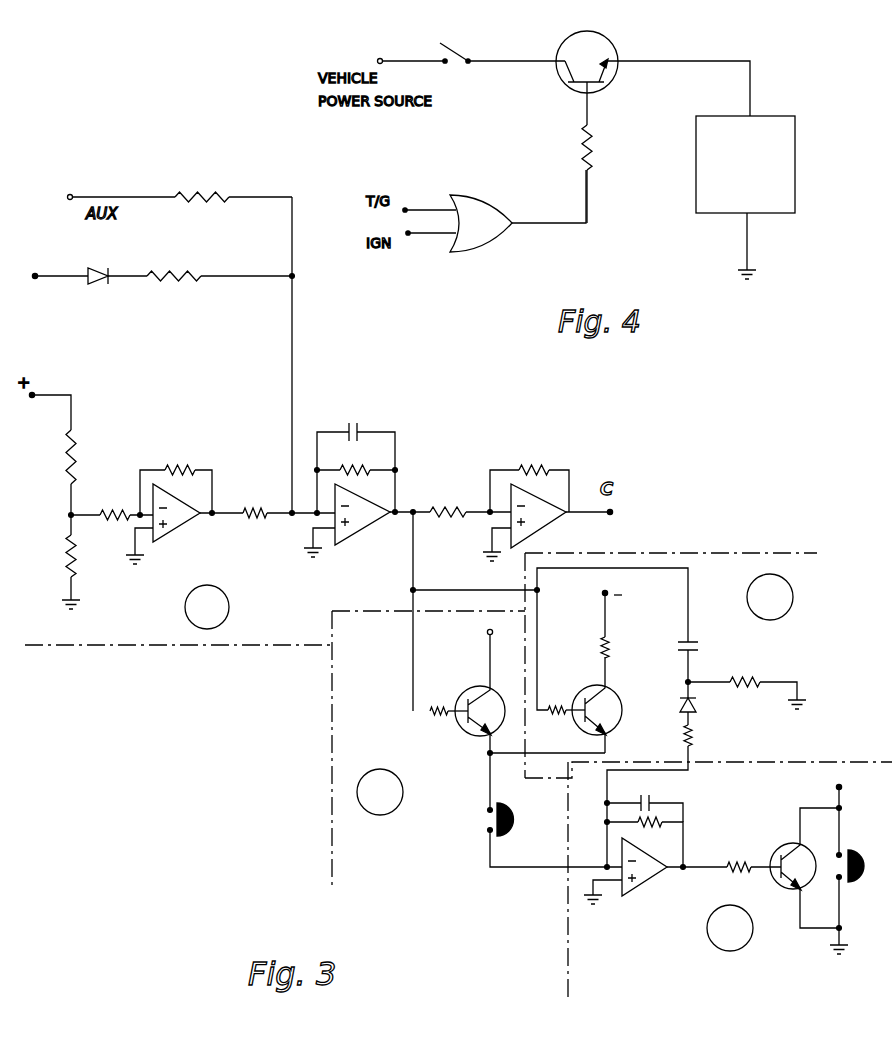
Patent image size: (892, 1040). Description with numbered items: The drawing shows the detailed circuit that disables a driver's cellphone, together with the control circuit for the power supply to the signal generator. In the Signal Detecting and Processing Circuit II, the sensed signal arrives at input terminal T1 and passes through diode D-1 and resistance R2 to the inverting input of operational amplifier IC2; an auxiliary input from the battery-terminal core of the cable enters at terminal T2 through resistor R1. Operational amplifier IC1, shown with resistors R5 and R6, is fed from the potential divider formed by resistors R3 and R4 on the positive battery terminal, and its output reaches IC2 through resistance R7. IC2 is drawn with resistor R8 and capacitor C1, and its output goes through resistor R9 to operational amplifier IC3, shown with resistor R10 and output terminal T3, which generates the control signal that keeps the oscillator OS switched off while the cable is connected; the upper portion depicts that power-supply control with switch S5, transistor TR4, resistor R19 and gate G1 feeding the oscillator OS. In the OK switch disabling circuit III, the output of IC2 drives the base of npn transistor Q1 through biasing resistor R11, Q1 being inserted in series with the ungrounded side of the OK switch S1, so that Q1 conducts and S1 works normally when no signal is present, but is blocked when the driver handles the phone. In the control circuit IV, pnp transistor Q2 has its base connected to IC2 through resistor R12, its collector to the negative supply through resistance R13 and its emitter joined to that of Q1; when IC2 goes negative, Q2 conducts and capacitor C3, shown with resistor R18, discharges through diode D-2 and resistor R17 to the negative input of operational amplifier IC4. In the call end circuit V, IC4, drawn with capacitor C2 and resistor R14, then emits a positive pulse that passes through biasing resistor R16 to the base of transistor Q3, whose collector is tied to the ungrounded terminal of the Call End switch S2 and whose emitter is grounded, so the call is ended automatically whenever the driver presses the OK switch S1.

In FIG. 4, the power switch S5 is at (457, 42).
In FIG. 4, the transistor TR4 is at (597, 53).
In FIG. 4, the resistor R19 is at (607, 158).
In FIG. 4, the oscillator OS is at (745, 197).
In FIG. 4, the OR gate G1 is at (494, 211).
In FIG. 3, the input terminal T1 is at (35, 266).
In FIG. 3, the auxiliary input terminal T2 is at (68, 187).
In FIG. 3, the output terminal T3 is at (601, 521).
In FIG. 3, the diode D-1 is at (91, 285).
In FIG. 3, the diode D-2 is at (703, 703).
In FIG. 3, the resistor R1 is at (182, 186).
In FIG. 3, the resistance R2 is at (219, 288).
In FIG. 3, the potential divider resistor R3 is at (58, 472).
In FIG. 3, the potential divider resistor R4 is at (58, 557).
In FIG. 3, the resistor R5 is at (112, 502).
In FIG. 3, the feedback resistor R6 is at (176, 481).
In FIG. 3, the resistance R7 is at (267, 501).
In FIG. 3, the feedback resistor R8 is at (356, 480).
In FIG. 3, the resistor R9 is at (470, 501).
In FIG. 3, the feedback resistor R10 is at (529, 479).
In FIG. 3, the biasing resistor R11 is at (442, 724).
In FIG. 3, the resistor R12 is at (564, 723).
In FIG. 3, the resistance R13 is at (623, 624).
In FIG. 3, the feedback resistor R14 is at (645, 842).
In FIG. 3, the biasing resistor R16 is at (724, 877).
In FIG. 3, the resistor R17 is at (668, 796).
In FIG. 3, the resistor R18 is at (747, 682).
In FIG. 3, the capacitor C1 is at (356, 436).
In FIG. 3, the capacitor C2 is at (645, 799).
In FIG. 3, the capacitor C3 is at (698, 652).
In FIG. 3, the operational amplifier IC1 is at (163, 524).
In FIG. 3, the operational amplifier IC2 is at (347, 520).
In FIG. 3, the operational amplifier IC3 is at (527, 522).
In FIG. 3, the operational amplifier IC4 is at (625, 876).
In FIG. 3, the npn transistor Q1 is at (484, 689).
In FIG. 3, the pnp transistor Q2 is at (604, 705).
In FIG. 3, the transistor Q3 is at (800, 868).
In FIG. 3, the OK switch S1 is at (526, 835).
In FIG. 3, the Call End switch S2 is at (851, 859).
In FIG. 3, the Signal Detecting and Processing Circuit II is at (207, 607).
In FIG. 3, the OK switch disabling circuit III is at (380, 792).
In FIG. 3, the control circuit IV is at (770, 597).
In FIG. 3, the call end circuit V is at (730, 928).